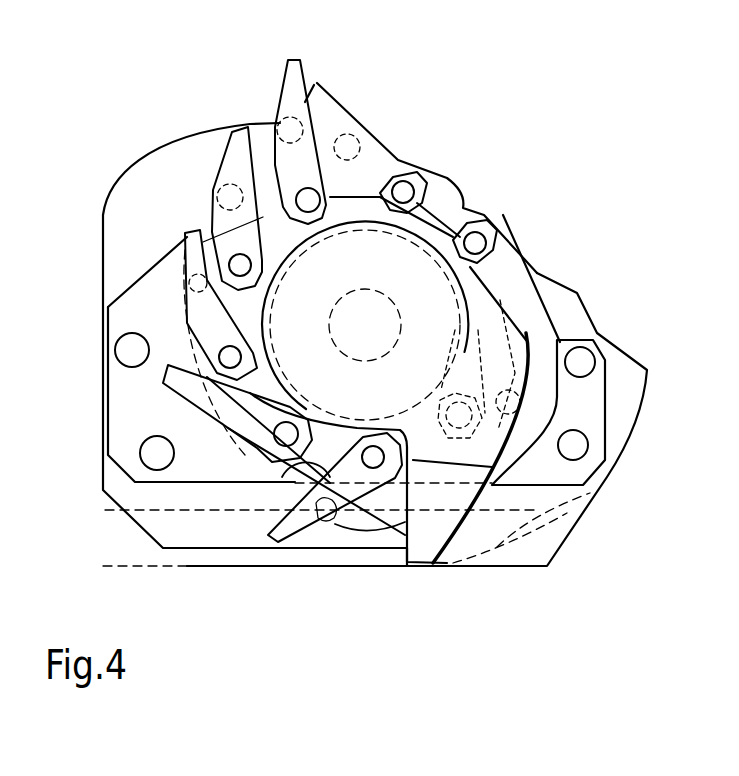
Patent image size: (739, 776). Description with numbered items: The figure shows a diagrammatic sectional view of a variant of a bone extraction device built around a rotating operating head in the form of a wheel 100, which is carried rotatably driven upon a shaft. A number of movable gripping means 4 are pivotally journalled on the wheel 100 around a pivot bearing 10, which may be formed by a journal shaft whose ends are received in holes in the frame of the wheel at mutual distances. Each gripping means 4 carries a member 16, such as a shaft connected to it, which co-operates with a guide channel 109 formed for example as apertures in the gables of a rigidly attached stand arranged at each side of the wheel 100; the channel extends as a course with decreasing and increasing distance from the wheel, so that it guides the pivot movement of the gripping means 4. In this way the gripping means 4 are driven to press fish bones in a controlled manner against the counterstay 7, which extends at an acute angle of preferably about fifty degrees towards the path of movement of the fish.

The pivot bearing 10 is at (407, 193).
The wheel 100 is at (470, 293).
The guide channel 109 is at (263, 473).
The gripping means 4 is at (296, 530).
The member 16 is at (338, 530).
The counterstay 7 is at (479, 502).